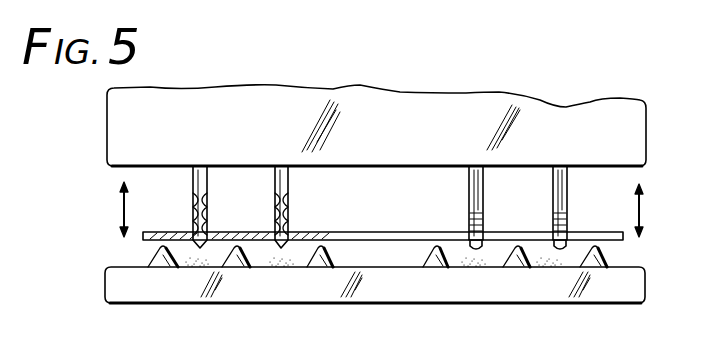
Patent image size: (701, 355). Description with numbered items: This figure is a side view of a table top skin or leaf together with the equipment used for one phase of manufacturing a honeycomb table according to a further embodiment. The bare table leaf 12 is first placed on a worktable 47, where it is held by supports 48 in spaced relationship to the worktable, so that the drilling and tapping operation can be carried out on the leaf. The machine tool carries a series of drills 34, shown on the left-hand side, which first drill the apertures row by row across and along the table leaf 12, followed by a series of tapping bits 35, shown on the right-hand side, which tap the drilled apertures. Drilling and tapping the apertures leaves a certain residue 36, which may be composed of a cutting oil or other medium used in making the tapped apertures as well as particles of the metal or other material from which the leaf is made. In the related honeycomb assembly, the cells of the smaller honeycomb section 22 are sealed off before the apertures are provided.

The smaller honeycomb section 22 is at (117, 122).
The drills 34 is at (275, 203).
The tapping bits 35 is at (551, 200).
The table leaf 12 is at (367, 232).
The worktable 47 is at (113, 287).
The residue 36 is at (185, 260).
The supports 48 is at (420, 258).